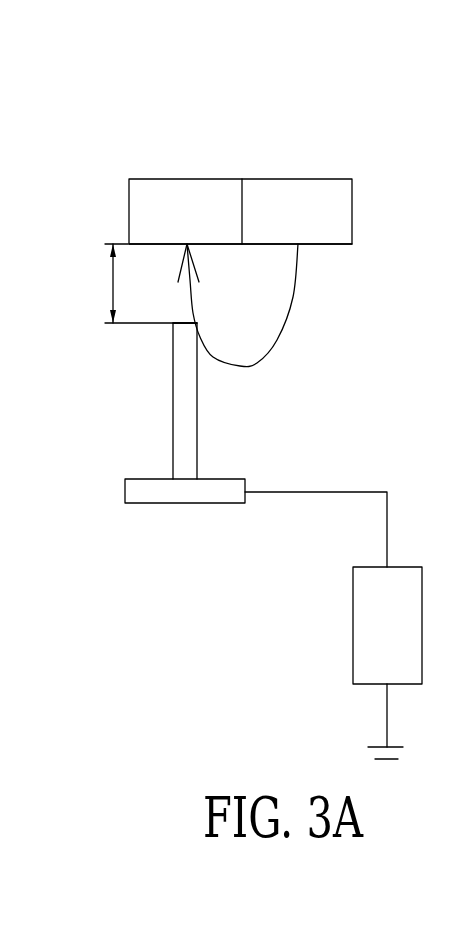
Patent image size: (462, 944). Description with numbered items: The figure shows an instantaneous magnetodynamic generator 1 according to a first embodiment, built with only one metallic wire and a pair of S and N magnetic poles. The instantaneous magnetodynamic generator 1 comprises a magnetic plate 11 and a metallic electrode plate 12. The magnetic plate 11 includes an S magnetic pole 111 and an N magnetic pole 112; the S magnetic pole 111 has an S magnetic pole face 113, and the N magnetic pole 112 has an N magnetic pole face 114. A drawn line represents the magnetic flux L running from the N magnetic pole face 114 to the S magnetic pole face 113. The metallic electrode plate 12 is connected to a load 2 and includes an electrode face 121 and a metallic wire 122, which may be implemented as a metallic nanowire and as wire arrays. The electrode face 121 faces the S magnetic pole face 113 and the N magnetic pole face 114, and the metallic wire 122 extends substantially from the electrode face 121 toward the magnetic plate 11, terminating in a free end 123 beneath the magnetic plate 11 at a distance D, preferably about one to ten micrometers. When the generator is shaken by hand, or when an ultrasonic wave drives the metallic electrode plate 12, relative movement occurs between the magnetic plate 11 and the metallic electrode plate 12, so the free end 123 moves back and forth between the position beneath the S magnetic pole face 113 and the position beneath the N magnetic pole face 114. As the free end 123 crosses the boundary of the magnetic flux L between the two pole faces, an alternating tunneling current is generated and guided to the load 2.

The instantaneous magnetodynamic generator 1 is at (77, 512).
The magnetic plate 11 is at (193, 128).
The S magnetic pole 111 is at (218, 182).
The N magnetic pole 112 is at (302, 182).
The S magnetic pole face 113 is at (205, 245).
The N magnetic pole face 114 is at (318, 245).
The metallic electrode plate 12 is at (150, 495).
The electrode face 121 is at (147, 478).
The metallic wire 122 is at (180, 402).
The free end 123 is at (186, 325).
The load 2 is at (360, 611).